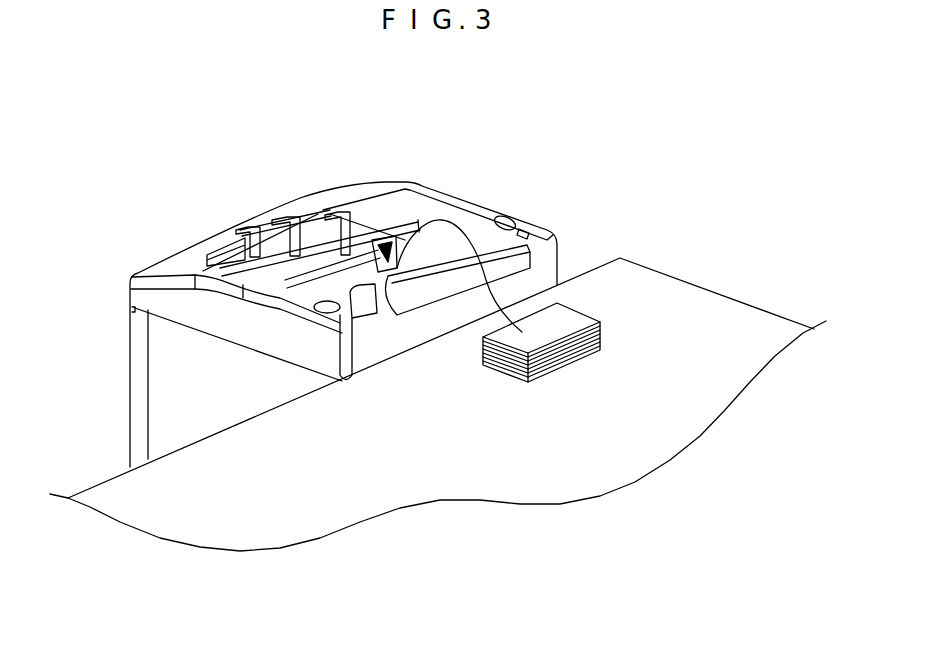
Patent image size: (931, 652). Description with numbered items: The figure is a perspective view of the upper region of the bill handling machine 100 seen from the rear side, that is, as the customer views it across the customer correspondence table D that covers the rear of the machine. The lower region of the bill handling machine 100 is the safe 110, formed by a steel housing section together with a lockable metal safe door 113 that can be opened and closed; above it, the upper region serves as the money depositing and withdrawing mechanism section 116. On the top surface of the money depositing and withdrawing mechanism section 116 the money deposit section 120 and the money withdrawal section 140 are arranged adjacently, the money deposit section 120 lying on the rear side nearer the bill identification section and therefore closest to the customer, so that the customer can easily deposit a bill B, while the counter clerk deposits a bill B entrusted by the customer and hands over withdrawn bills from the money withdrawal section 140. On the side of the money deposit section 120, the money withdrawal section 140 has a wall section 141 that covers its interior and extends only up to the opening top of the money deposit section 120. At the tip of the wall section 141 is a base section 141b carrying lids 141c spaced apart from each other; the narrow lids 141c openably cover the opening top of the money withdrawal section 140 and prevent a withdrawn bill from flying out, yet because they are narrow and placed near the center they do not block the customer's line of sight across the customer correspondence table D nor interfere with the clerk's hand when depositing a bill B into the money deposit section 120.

The bill handling machine 100 is at (417, 143).
The safe 110 is at (217, 371).
The safe door 113 is at (133, 370).
The money depositing and withdrawing mechanism section 116 is at (373, 212).
The money deposit section 120 is at (392, 290).
The money withdrawal section 140 is at (298, 218).
The wall section 141 is at (348, 330).
The base section 141b is at (370, 212).
The lids 141c is at (339, 214).
The bill B is at (574, 326).
The customer correspondence table D is at (282, 509).